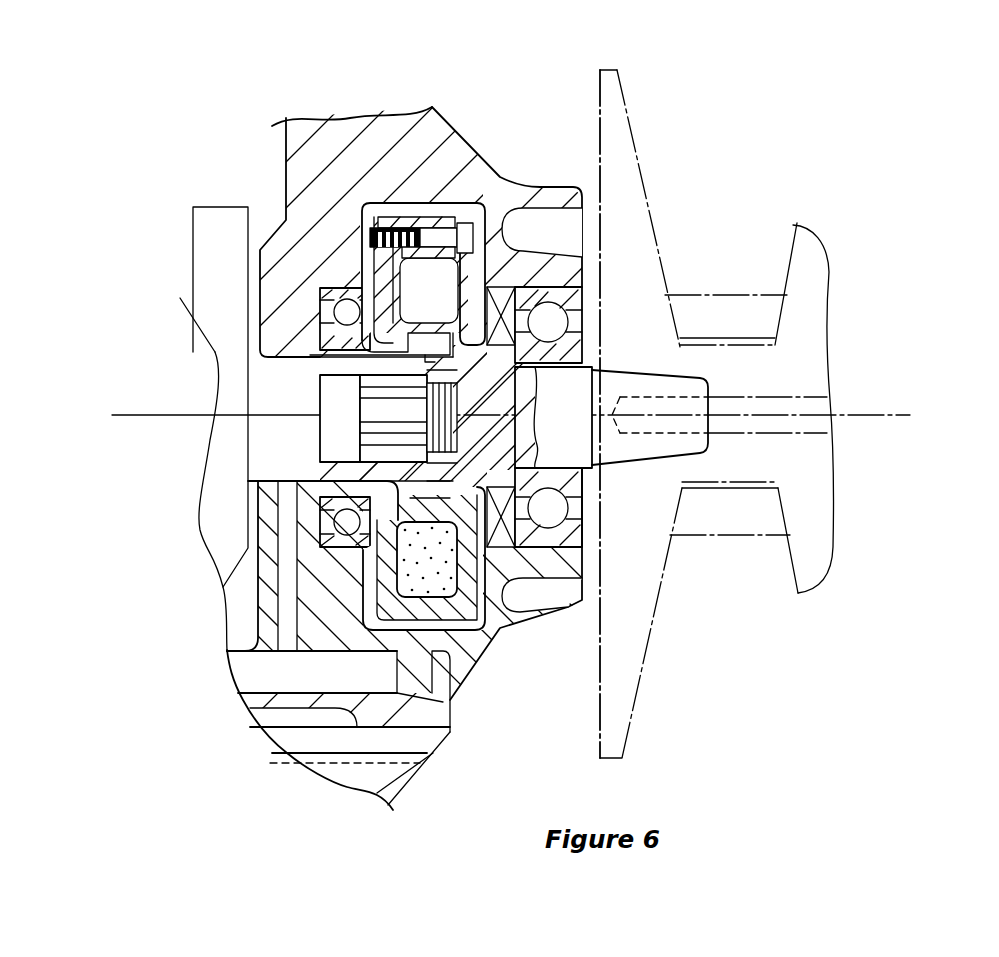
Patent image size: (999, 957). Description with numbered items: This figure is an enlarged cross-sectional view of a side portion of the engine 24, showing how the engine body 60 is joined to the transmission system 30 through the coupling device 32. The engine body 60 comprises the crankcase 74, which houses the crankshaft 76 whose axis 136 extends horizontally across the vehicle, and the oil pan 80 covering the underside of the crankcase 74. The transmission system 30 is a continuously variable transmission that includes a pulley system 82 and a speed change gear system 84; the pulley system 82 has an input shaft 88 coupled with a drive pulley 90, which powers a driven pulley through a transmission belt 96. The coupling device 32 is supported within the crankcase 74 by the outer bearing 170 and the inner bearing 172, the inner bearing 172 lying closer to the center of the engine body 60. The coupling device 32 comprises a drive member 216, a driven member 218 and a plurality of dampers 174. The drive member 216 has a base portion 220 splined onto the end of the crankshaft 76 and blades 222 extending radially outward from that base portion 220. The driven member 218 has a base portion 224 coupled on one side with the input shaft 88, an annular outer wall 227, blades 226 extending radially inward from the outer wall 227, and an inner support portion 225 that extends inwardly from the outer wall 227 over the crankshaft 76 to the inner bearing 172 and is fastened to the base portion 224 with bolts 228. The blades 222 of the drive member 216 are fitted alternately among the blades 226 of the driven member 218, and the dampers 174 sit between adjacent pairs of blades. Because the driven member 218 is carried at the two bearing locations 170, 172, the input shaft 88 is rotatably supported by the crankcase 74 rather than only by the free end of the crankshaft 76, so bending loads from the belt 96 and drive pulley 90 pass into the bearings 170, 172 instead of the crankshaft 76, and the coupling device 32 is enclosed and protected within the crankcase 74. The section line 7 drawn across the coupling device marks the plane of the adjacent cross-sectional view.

The section line 7- 7 is at (381, 445).
The engine 24 is at (168, 138).
The transmission system 30 is at (843, 196).
The coupling device 32 is at (484, 589).
The engine body 60 is at (172, 195).
The crankcase 74 is at (278, 325).
The crankshaft 76 is at (218, 266).
The oil pan 80 is at (450, 743).
The pulley system 82 is at (640, 740).
The speed change gear system 84 is at (754, 754).
The input shaft 88 is at (665, 445).
The drive pulley 90 is at (638, 693).
The transmission belt 96 is at (772, 538).
The axis 136 is at (908, 410).
The outer bearing 170 is at (552, 318).
The inner bearing 172 is at (345, 308).
The dampers 174 is at (428, 573).
The drive member 216 is at (109, 458).
The driven member 218 is at (577, 77).
The base portion 220 is at (340, 467).
The blades 222 is at (407, 573).
The base portion 224 is at (440, 290).
The inner support portion 225 is at (383, 215).
The blades 226 is at (516, 248).
The annular outer wall 227 is at (433, 213).
The bolts 228 is at (420, 213).